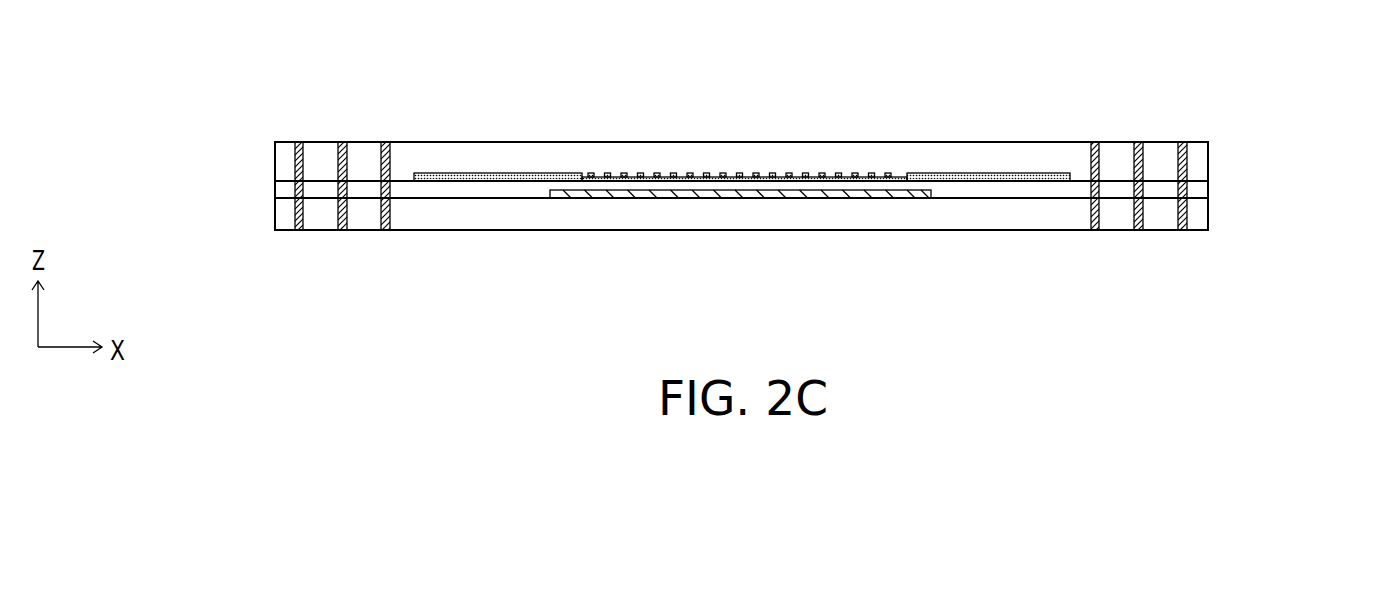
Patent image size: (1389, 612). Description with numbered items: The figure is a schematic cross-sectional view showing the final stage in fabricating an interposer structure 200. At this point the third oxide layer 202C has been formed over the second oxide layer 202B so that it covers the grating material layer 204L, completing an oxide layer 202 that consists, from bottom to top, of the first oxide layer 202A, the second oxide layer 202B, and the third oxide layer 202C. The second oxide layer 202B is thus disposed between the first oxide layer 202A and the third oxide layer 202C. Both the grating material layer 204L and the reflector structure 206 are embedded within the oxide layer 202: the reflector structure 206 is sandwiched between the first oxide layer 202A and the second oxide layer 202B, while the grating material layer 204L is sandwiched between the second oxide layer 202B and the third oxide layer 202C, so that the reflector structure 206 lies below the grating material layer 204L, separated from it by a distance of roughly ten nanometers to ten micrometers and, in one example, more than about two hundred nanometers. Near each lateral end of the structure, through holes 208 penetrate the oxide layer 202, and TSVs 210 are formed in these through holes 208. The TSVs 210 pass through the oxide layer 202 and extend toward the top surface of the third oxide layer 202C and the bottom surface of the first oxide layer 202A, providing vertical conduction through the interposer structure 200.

The interposer structure 200 is at (781, 183).
The oxide layer 202 is at (823, 188).
The first oxide layer 202A is at (1200, 222).
The second oxide layer 202B is at (1200, 188).
The third oxide layer 202C is at (1200, 155).
The grating material layer 204L is at (947, 172).
The reflector structure 206 is at (595, 192).
The through holes 208 is at (313, 163).
The TSVs 210 is at (302, 222).